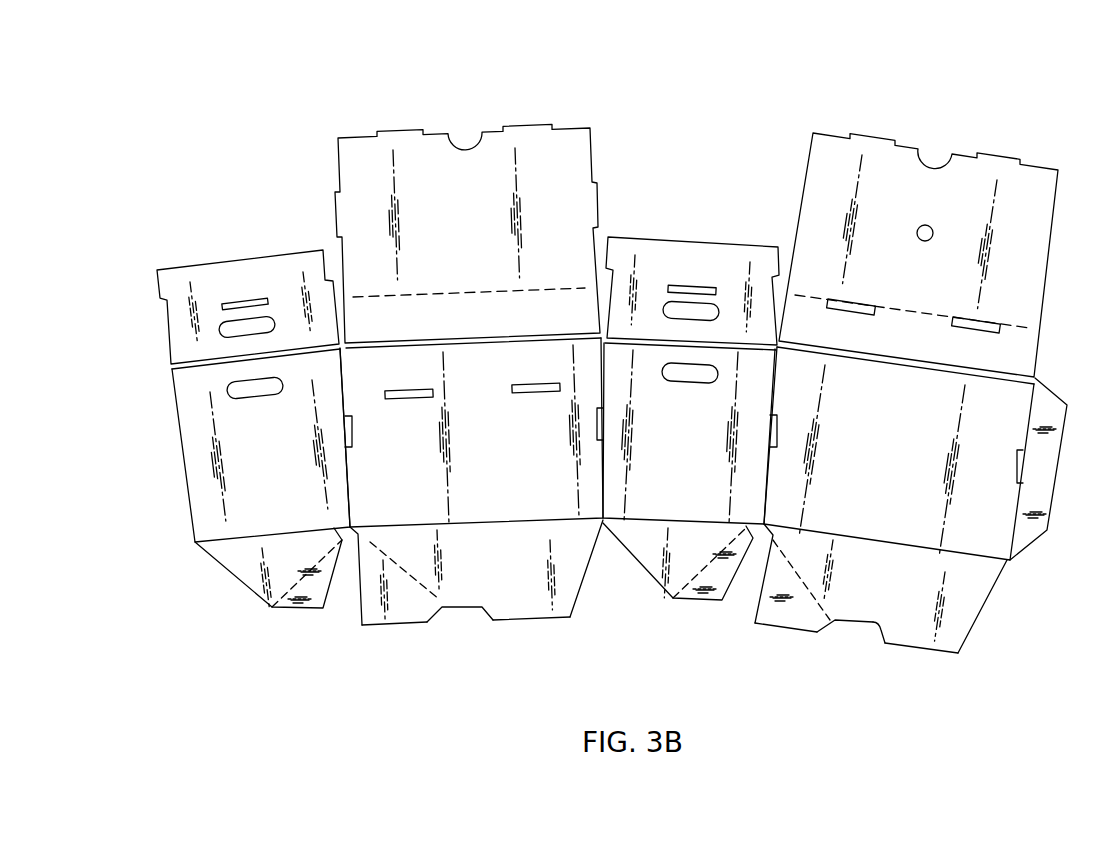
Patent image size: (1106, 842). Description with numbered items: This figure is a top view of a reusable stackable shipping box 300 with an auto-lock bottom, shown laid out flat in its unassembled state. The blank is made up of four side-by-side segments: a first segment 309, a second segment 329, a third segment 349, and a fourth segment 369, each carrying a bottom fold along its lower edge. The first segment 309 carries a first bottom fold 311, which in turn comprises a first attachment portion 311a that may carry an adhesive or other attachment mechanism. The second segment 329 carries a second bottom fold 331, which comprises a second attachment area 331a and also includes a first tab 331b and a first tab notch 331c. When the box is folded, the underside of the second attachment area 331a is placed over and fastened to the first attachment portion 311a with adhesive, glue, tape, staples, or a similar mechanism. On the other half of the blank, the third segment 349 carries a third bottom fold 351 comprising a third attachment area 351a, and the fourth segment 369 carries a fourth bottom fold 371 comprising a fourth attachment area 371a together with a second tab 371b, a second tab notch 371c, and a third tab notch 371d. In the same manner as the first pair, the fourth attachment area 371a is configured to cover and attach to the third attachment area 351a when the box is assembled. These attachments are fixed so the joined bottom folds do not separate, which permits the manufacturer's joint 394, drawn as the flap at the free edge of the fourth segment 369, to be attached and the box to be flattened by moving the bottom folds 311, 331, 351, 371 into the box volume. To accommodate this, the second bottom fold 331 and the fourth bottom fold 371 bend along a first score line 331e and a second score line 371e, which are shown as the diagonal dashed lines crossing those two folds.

The reusable box 300 is at (120, 135).
The first segment 309 is at (245, 242).
The first bottom fold 311 is at (226, 555).
The first attachment portion 311a is at (281, 612).
The second segment 329 is at (471, 122).
The second bottom fold 331 is at (574, 572).
The second attachment area 331a is at (399, 619).
The first tab 331b is at (513, 618).
The first tab notch 331c is at (461, 636).
The first score line 331e is at (370, 543).
The third segment 349 is at (693, 228).
The third bottom fold 351 is at (633, 542).
The third attachment area 351a is at (712, 598).
The fourth segment 369 is at (940, 144).
The fourth bottom fold 371 is at (990, 587).
The fourth attachment area 371a is at (805, 627).
The second tab 371b is at (933, 647).
The second tab notch 371c is at (851, 648).
The third tab notch 371d is at (877, 620).
The second score line 371e is at (805, 585).
The manufacturer's joint 394 is at (1052, 466).